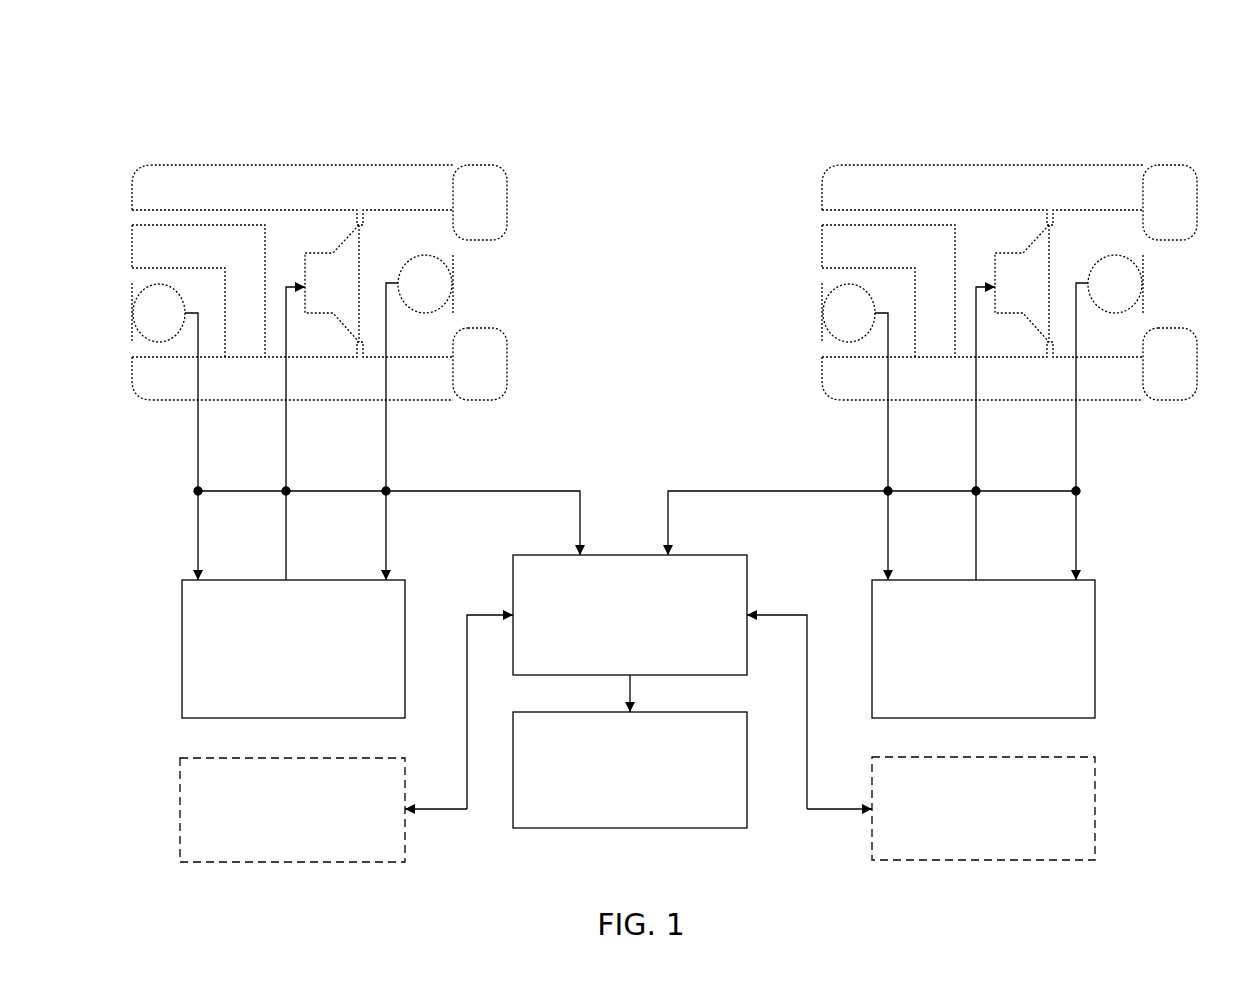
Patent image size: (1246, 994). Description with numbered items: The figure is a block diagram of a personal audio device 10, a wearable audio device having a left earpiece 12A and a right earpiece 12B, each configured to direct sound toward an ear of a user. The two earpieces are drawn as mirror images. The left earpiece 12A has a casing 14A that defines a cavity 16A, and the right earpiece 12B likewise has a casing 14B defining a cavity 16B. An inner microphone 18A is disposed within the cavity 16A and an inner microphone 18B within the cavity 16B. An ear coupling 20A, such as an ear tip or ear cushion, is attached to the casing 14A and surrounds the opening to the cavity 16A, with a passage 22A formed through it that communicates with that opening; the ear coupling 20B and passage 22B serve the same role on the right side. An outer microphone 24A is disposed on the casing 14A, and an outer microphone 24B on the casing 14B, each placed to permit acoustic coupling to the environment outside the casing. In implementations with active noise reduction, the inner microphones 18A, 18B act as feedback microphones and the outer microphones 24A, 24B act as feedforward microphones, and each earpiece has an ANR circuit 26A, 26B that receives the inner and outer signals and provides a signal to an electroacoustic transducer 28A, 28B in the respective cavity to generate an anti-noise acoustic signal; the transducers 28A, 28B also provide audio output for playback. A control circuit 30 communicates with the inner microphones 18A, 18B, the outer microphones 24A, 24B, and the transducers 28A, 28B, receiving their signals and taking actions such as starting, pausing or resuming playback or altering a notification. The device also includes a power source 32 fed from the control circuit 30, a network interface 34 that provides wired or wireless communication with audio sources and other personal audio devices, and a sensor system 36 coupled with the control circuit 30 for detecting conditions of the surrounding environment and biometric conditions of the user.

The personal audio device 10 is at (683, 112).
The left earpiece 12A is at (180, 117).
The right earpiece 12B is at (870, 117).
The casing 14A is at (284, 200).
The casing 14B is at (982, 282).
The cavity 16A is at (435, 335).
The cavity 16B is at (1033, 332).
The inner microphone 18A is at (406, 298).
The inner microphone 18B is at (1109, 417).
The ear coupling 20A is at (461, 216).
The ear coupling 20B is at (1170, 282).
The passage 22A is at (488, 270).
The passage 22B is at (1191, 269).
The outer microphone 24A is at (140, 327).
The outer microphone 24B is at (855, 432).
The ANR circuit 26A is at (272, 671).
The ANR circuit 26B is at (963, 671).
The electroacoustic transducer 28A is at (310, 300).
The electroacoustic transducer 28B is at (1012, 402).
The control circuit 30 is at (616, 657).
The power source 32 is at (616, 812).
The network interface 34 is at (279, 851).
The sensor system 36 is at (970, 841).